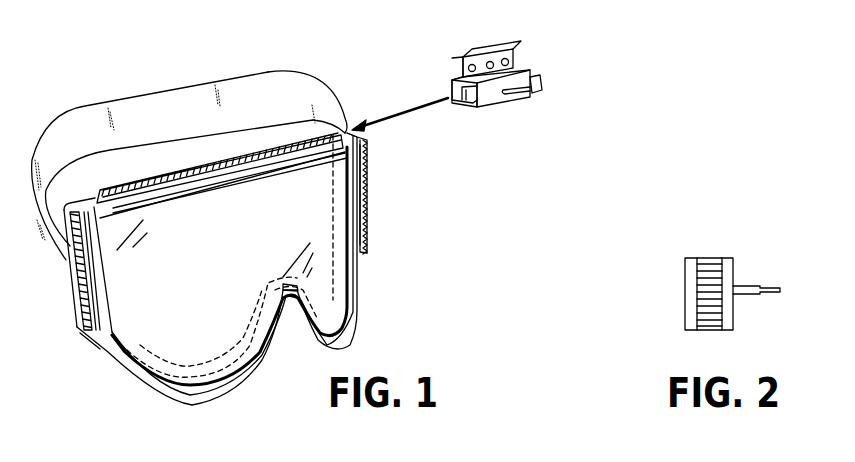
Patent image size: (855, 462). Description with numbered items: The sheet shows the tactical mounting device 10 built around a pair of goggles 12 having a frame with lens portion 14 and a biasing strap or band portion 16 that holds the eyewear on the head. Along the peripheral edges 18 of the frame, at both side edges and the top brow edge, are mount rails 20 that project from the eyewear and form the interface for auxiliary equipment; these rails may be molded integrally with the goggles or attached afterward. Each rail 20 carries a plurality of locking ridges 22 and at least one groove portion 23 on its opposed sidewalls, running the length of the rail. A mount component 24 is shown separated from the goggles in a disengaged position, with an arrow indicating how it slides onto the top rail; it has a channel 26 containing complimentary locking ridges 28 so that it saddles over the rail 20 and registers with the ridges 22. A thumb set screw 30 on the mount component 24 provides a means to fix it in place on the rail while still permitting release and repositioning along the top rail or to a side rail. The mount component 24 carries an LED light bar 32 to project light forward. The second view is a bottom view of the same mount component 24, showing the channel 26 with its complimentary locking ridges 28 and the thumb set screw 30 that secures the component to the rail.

In FIG. 1, the device 10 is at (623, 118).
In FIG. 1, the goggles 12 is at (147, 382).
In FIG. 1, the frame with lens portion 14 is at (358, 317).
In FIG. 1, the biasing strap or band portion 16 is at (161, 88).
In FIG. 1, the peripheral edges 18 is at (108, 352).
In FIG. 1, the mount rail 20 is at (130, 181).
In FIG. 1, the locking ridge 22 is at (213, 173).
In FIG. 1, the groove portion 23 is at (283, 157).
In FIG. 1, the mount component 24 is at (525, 70).
In FIG. 2, the mount component 24 is at (685, 273).
In FIG. 1, the channel 26 is at (458, 88).
In FIG. 2, the channel 26 is at (720, 260).
In FIG. 1, the complimentary locking ridges 28 is at (470, 98).
In FIG. 2, the complimentary locking ridges 28 is at (712, 323).
In FIG. 1, the thumb set screw 30 is at (525, 95).
In FIG. 2, the thumb set screw 30 is at (755, 287).
In FIG. 1, the LED light bar 32 is at (473, 55).